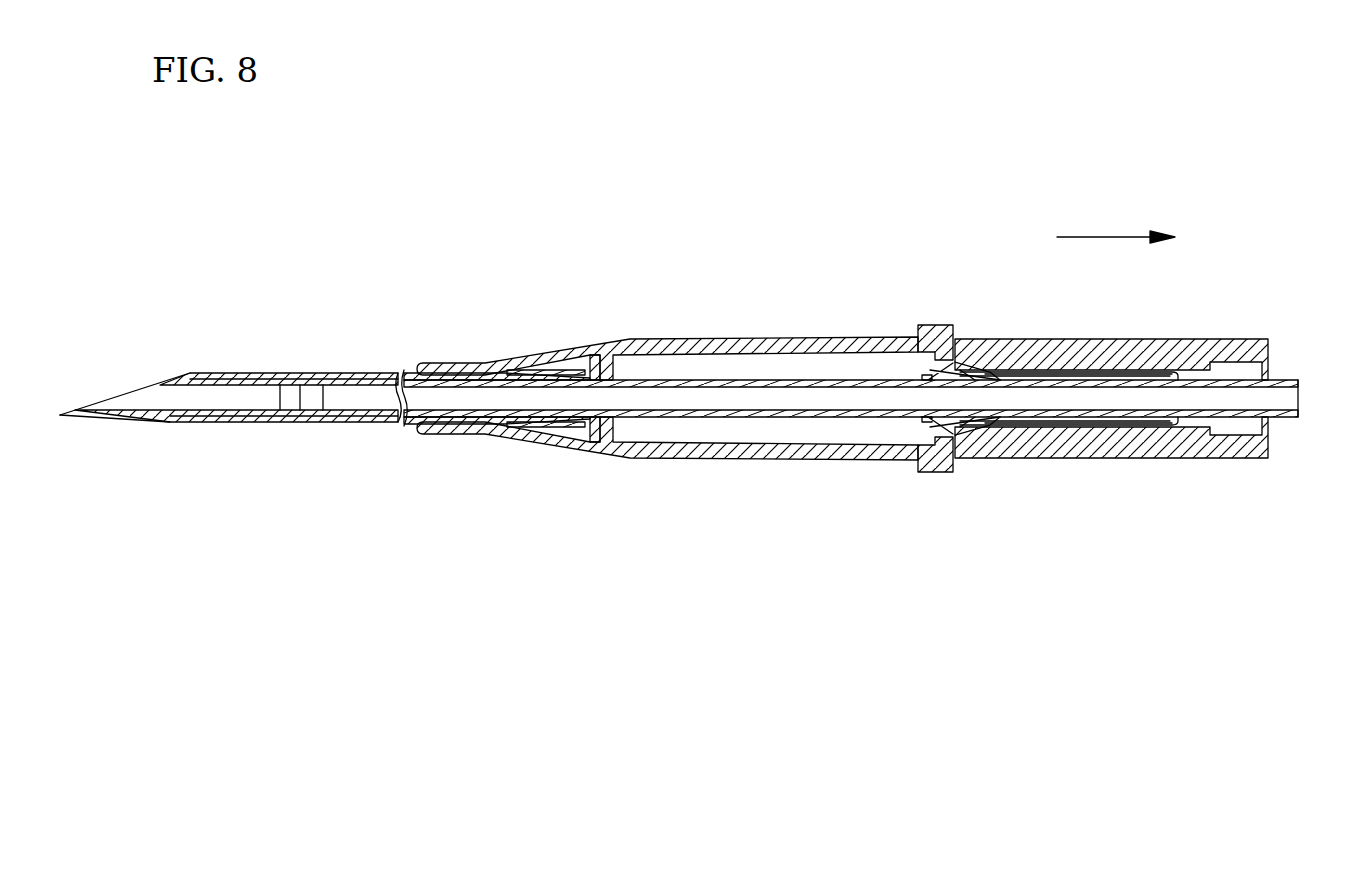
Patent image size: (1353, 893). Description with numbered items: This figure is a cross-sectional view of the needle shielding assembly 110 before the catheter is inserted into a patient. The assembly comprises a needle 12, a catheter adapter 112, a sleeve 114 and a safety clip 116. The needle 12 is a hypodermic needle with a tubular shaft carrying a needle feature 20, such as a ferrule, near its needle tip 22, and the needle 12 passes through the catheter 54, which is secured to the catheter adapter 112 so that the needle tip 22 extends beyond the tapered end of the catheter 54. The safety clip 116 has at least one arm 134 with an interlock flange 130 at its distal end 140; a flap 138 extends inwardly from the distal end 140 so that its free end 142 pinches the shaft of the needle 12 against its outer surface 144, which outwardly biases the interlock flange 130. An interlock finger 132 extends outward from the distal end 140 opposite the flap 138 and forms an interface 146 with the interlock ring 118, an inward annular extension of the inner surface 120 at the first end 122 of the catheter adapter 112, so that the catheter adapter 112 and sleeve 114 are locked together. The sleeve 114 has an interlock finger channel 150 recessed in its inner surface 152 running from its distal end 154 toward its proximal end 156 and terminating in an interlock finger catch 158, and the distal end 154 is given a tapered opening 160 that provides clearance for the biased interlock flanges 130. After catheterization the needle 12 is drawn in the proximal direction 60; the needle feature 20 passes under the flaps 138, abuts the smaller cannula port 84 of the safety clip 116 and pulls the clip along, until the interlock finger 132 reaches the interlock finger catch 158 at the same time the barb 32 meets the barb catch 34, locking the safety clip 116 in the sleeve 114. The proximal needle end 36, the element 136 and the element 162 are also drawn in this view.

The needle 12 is at (1300, 420).
The needle feature 20 is at (290, 398).
The needle tip 22 is at (63, 419).
The barb 32 is at (1130, 350).
The barb catch 34 is at (1230, 350).
The proximal end of needle 36 is at (1295, 350).
The catheter 54 is at (268, 372).
The proximal direction 60 is at (1113, 237).
The cannula port 84 is at (1192, 350).
The needle shielding assembly 110 is at (1203, 660).
The catheter adapter 112 is at (503, 361).
The sleeve 114 is at (1138, 465).
The safety clip 116 is at (1178, 445).
The interlock ring 118 is at (955, 470).
The inner surface 120 is at (690, 428).
The first end 122 is at (928, 325).
The interlock flange 130 is at (990, 458).
The interlock finger 132 is at (935, 458).
The arm 134 is at (1130, 466).
The tab 136 is at (985, 360).
The flap 138 is at (905, 358).
The distal end 140 is at (968, 458).
The free end 142 is at (880, 432).
The outer surface 144 is at (648, 420).
The interface 146 is at (900, 430).
The interlock finger channel 150 is at (965, 338).
The inner surface 152 is at (1235, 450).
The distal end 154 is at (962, 460).
The proximal end 156 is at (1280, 345).
The interlock finger catch 158 is at (1035, 458).
The tapered opening 160 is at (978, 352).
The detent 162 is at (980, 458).